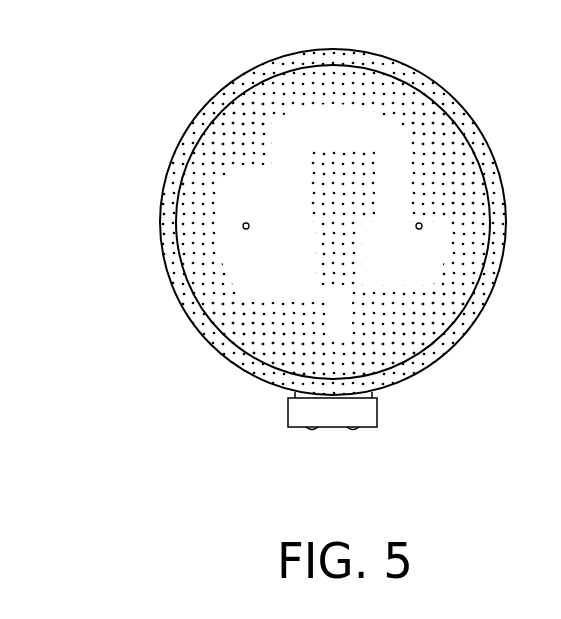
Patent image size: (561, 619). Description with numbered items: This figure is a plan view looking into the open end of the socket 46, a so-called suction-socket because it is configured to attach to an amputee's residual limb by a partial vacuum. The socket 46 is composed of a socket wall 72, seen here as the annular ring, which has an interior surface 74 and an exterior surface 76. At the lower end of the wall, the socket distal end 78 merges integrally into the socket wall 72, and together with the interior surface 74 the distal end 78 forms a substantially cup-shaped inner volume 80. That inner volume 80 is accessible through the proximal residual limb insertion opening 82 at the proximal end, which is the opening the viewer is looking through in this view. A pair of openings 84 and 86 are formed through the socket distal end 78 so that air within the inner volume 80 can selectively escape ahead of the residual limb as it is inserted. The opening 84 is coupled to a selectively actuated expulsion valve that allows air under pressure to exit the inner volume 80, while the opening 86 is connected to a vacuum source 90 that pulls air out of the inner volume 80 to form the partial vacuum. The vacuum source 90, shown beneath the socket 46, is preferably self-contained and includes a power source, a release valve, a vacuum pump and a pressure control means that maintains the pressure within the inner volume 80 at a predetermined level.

The socket 46 is at (124, 212).
The socket wall 72 is at (183, 293).
The interior surface 74 is at (182, 185).
The exterior surface 76 is at (160, 253).
The socket distal end 78 is at (327, 268).
The inner volume 80 is at (352, 142).
The proximal residual limb insertion opening 82 is at (392, 100).
The opening 84 is at (250, 229).
The opening 86 is at (415, 229).
The vacuum source 90 is at (372, 412).